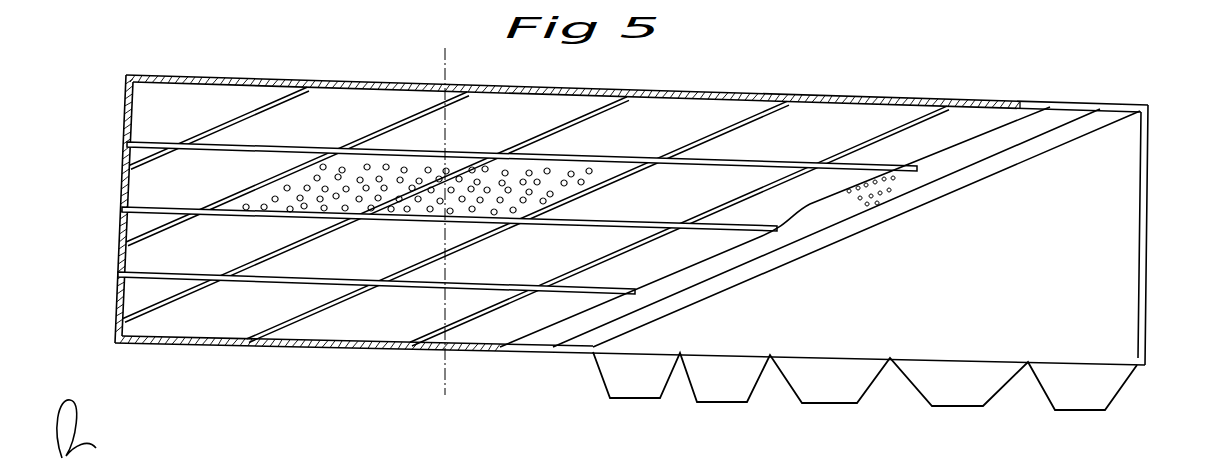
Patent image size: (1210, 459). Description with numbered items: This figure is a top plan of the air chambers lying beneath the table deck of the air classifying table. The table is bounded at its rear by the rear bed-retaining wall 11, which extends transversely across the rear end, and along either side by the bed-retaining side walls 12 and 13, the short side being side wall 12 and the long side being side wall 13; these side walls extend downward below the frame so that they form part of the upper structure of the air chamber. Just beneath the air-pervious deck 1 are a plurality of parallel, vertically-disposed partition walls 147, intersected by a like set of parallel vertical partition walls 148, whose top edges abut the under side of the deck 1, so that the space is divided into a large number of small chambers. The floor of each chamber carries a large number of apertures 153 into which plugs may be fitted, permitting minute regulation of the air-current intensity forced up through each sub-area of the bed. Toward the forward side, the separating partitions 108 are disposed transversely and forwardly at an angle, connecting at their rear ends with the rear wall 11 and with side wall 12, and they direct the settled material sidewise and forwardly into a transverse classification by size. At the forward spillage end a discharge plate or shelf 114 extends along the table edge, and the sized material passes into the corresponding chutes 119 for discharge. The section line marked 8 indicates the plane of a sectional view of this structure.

The air-pervious deck 1 is at (880, 206).
The section line 8- 8 is at (447, 58).
The rear bed-retaining wall 11 is at (119, 183).
The bed-retaining side wall 12 is at (335, 352).
The bed-retaining side wall 13 is at (809, 97).
The separating partitions 108 is at (957, 176).
The discharge plate or shelf 114 is at (1115, 263).
The chutes 119 is at (852, 397).
The partition walls 147 is at (459, 153).
The partition walls 148 is at (562, 124).
The apertures 153 is at (578, 187).